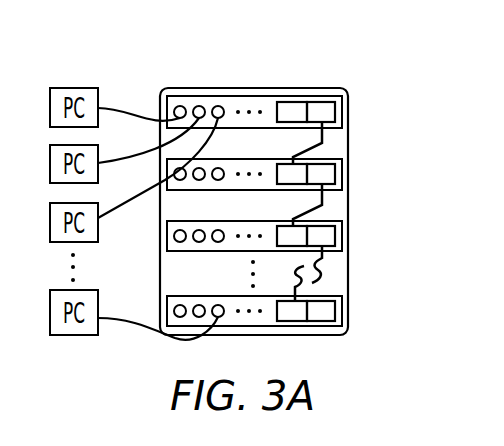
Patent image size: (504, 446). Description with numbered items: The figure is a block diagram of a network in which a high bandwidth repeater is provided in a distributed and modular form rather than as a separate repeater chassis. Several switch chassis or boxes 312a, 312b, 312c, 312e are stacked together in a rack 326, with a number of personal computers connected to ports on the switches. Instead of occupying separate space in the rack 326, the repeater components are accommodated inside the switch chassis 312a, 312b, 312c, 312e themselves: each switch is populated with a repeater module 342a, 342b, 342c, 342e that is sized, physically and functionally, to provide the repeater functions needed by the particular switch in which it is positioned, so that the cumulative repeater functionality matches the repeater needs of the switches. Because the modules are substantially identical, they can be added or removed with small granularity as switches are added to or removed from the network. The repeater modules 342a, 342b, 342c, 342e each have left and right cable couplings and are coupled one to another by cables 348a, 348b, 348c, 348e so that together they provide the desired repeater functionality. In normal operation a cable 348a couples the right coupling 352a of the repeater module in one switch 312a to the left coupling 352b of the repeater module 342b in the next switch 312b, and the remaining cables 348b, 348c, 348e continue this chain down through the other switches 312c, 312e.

The rack 326 is at (203, 88).
The switch chassis 312a is at (297, 79).
The switch chassis 312b is at (298, 162).
The switch chassis 312c is at (297, 224).
The switch chassis 312e is at (302, 325).
The repeater module 342a is at (326, 76).
The repeater module 342b is at (333, 175).
The repeater module 342c is at (333, 238).
The repeater module 342e is at (333, 317).
The right coupling 352a is at (313, 102).
The left coupling 352b is at (280, 102).
The cable 348a is at (306, 150).
The cable 348b is at (307, 200).
The cable 348c is at (307, 265).
The cable 348e is at (300, 287).